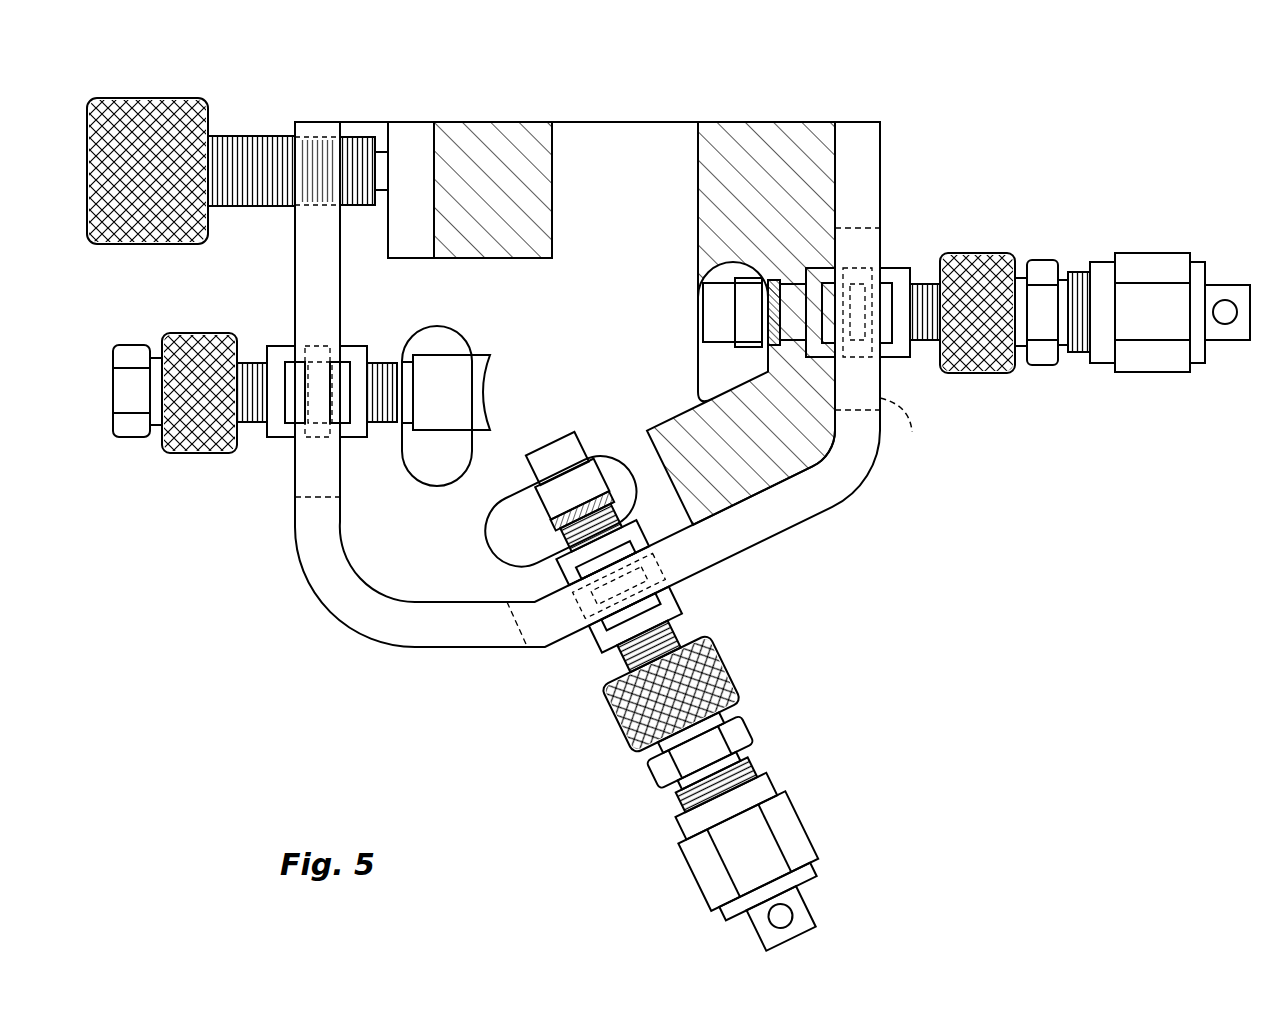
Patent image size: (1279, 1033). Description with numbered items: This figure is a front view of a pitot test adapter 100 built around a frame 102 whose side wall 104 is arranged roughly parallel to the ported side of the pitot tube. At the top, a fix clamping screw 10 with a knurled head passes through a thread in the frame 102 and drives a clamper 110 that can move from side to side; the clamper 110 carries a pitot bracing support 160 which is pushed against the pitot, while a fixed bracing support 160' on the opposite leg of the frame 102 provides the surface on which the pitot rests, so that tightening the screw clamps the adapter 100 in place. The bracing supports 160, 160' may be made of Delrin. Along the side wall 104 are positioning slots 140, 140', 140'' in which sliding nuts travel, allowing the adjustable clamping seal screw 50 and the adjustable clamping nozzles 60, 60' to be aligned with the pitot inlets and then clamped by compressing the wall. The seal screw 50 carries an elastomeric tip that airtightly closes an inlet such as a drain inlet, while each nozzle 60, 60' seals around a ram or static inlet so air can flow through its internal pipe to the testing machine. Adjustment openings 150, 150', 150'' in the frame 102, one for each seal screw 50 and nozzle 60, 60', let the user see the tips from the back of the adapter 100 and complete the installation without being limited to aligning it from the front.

The pitot test adapter 100 is at (1070, 86).
The clamper 110 is at (428, 106).
The frame 102 is at (441, 556).
The side wall 104 is at (858, 140).
The fix clamping screw 10 is at (118, 246).
The adjustable clamping seal screw 50 is at (200, 333).
The adjustable clamping nozzle 60 is at (1095, 283).
The adjustable clamping nozzle 60' is at (730, 799).
The positioning slot 140 is at (913, 431).
The positioning slot 140' is at (518, 660).
The positioning slot 140'' is at (269, 505).
The adjustment opening 150 is at (717, 322).
The adjustment opening 150' is at (555, 494).
The adjustment opening 150'' is at (454, 385).
The pitot bracing support 160 is at (470, 161).
The fixed bracing support 160' is at (741, 295).